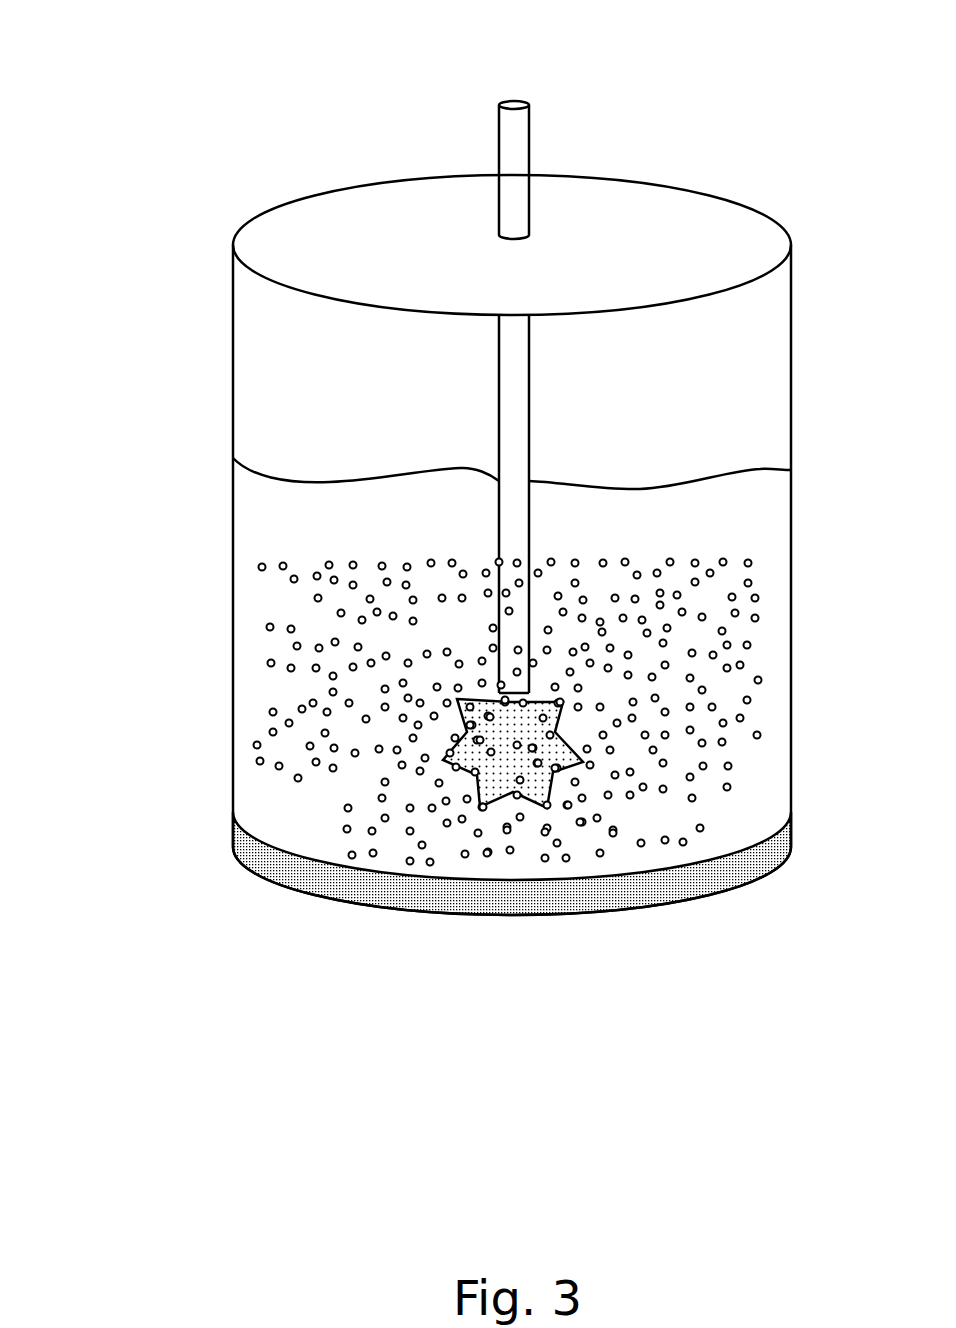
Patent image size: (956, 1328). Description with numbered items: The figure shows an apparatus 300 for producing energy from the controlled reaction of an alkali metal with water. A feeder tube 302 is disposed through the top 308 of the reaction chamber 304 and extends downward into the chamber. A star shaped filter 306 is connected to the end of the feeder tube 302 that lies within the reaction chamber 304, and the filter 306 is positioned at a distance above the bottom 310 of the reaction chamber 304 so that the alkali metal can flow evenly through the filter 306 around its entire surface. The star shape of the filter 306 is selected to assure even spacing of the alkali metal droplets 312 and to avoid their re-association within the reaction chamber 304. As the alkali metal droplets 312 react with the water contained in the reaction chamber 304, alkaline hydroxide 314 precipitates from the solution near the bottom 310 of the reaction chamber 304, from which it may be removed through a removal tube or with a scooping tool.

The apparatus 300 is at (190, 99).
The feeder tube 302 is at (518, 167).
The reaction chamber 304 is at (593, 367).
The filter 306 is at (491, 793).
The top of the reaction chamber 308 is at (263, 240).
The bottom of the reaction chamber 310 is at (378, 910).
The alkali metal droplets 312 is at (303, 708).
The alkaline hydroxide 314 is at (678, 892).